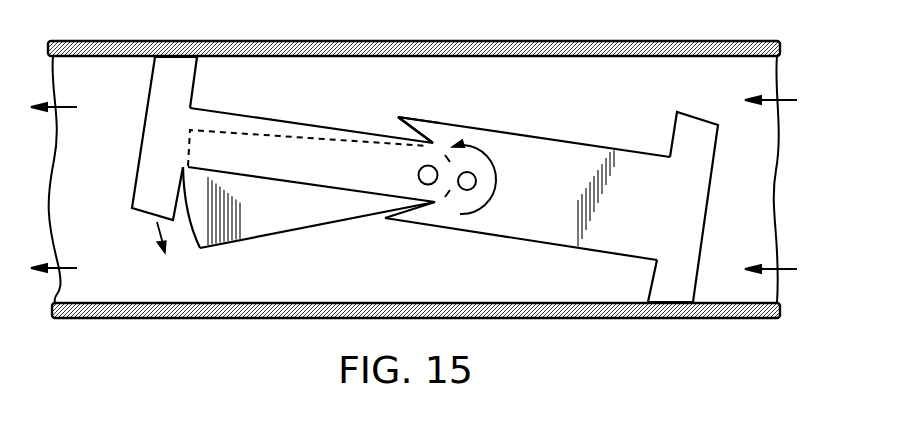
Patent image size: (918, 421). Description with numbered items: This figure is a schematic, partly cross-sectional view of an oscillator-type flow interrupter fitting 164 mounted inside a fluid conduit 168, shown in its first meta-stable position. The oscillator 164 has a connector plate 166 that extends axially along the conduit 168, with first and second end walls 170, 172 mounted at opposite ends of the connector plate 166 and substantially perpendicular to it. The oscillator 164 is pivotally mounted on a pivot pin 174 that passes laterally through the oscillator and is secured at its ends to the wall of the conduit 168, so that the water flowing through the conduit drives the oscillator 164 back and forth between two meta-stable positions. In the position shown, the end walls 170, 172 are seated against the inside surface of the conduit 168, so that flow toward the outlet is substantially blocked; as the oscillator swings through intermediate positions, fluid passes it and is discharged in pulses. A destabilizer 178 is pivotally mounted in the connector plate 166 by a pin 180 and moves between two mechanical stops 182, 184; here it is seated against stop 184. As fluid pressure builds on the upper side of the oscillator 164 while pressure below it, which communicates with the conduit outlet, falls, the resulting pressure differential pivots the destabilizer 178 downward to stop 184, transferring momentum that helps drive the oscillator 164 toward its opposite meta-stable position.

The fluid conduit 168 is at (464, 40).
The first end wall 170 is at (698, 208).
The second end wall 172 is at (152, 137).
The flow interrupter fitting 164 is at (236, 112).
The connector plate 166 is at (324, 178).
The pivot pin 174 is at (476, 183).
The destabilizer 178 is at (263, 220).
The pin 180 is at (430, 166).
The mechanical stop 182 is at (397, 127).
The mechanical stop 184 is at (390, 217).